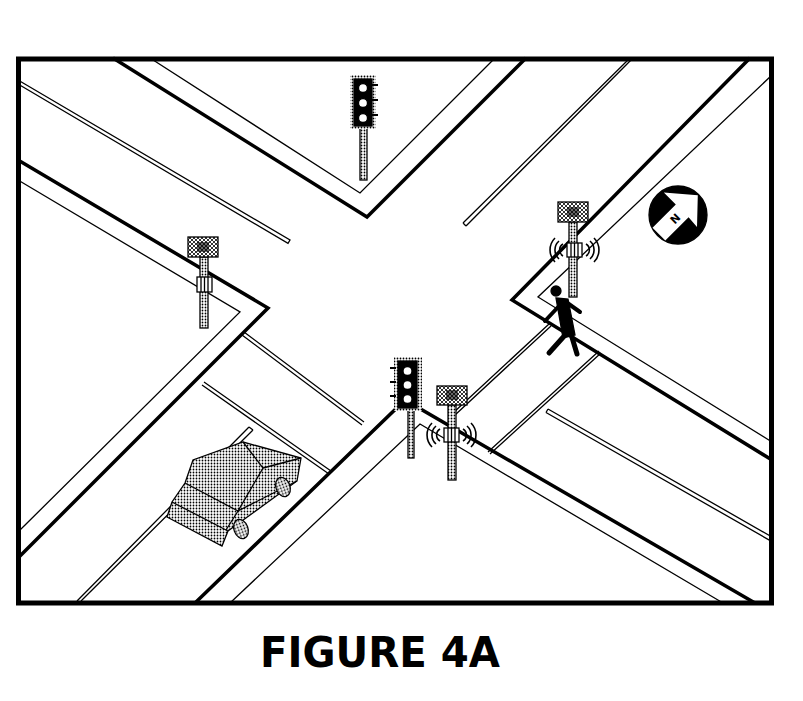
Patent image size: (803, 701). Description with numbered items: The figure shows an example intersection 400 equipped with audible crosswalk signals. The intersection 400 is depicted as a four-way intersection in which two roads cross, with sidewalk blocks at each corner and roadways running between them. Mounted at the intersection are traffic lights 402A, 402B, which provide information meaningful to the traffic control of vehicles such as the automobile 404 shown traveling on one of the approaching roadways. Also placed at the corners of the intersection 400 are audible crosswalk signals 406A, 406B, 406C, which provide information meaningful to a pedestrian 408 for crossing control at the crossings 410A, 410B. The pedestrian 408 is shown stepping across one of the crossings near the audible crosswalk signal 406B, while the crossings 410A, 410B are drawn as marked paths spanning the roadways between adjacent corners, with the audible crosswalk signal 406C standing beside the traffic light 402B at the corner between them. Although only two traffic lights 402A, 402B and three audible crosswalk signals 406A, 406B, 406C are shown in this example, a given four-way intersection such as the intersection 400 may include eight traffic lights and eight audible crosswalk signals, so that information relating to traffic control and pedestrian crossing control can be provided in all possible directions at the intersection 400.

The intersection 400 is at (247, 57).
The traffic light 402A is at (360, 165).
The traffic light 402B is at (408, 450).
The automobile 404 is at (195, 537).
The audible crosswalk signal 406A is at (195, 310).
The audible crosswalk signal 406B is at (580, 282).
The audible crosswalk signal 406C is at (457, 467).
The pedestrian 408 is at (552, 347).
The crossing 410A is at (306, 380).
The crossing 410B is at (488, 370).